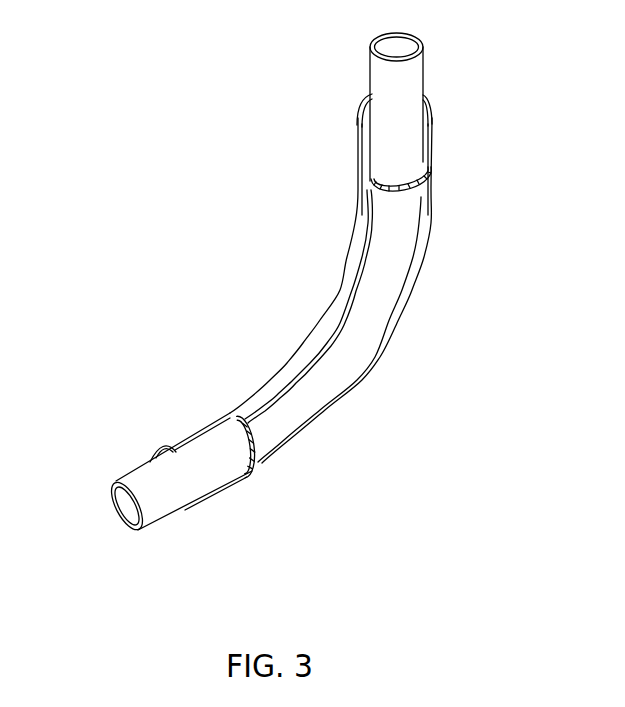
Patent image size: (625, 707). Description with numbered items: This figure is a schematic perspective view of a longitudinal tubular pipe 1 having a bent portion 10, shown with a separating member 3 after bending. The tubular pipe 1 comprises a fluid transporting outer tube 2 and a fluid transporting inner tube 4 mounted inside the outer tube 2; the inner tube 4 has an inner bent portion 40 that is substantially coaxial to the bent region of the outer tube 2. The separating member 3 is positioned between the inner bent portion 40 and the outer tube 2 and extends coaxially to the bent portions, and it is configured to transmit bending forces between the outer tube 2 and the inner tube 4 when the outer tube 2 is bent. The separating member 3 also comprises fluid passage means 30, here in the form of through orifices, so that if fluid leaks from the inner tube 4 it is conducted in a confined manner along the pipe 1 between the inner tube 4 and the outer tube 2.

The tubular pipe 1 is at (148, 207).
The bent portion 10 is at (332, 266).
The outer tube 2 is at (190, 427).
The separating member 3 is at (328, 388).
The inner tube 4 is at (122, 478).
The fluid passage means 30 is at (243, 420).
The inner bent portion 40 is at (378, 376).